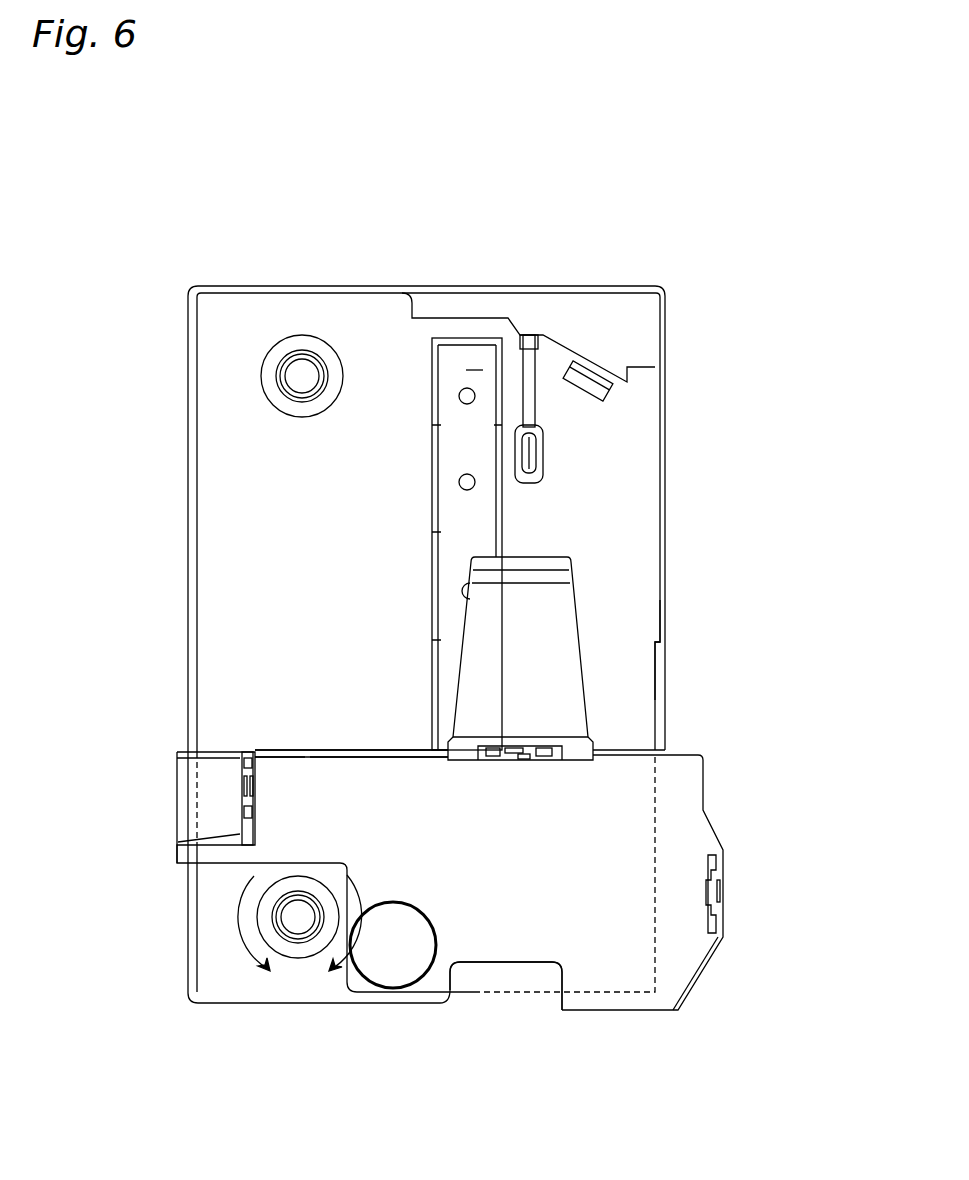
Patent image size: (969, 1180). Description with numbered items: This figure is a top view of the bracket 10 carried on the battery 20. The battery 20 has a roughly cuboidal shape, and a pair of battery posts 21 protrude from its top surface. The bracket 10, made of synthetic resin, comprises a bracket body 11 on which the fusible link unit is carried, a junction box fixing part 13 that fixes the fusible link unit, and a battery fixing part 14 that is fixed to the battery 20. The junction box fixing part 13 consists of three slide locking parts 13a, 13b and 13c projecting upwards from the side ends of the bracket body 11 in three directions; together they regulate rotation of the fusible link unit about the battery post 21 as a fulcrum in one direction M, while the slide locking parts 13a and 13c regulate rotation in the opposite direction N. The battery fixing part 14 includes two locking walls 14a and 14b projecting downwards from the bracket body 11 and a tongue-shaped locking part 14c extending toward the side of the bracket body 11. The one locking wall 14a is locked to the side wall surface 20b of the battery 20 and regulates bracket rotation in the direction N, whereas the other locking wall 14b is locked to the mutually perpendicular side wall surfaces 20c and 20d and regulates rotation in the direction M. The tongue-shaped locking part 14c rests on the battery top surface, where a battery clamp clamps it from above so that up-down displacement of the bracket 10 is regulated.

The bracket 10 is at (337, 751).
The bracket body 11 is at (680, 962).
The junction box fixing part 13 is at (204, 776).
The slide locking part 13a is at (240, 772).
The slide locking part 13b is at (525, 745).
The slide locking part 13c is at (724, 888).
The battery fixing part 14 is at (179, 828).
The locking wall 14a is at (187, 805).
The locking wall 14b is at (598, 1005).
The tongue-shaped locking part 14c is at (535, 610).
The battery 20 is at (188, 492).
The side wall surface 20b is at (188, 884).
The side wall surface 20c is at (502, 995).
The side wall surface 20d is at (655, 722).
The battery post 21 is at (297, 378).
The one direction of rotational displacement M is at (246, 918).
The opposite direction of rotational displacement N is at (372, 940).